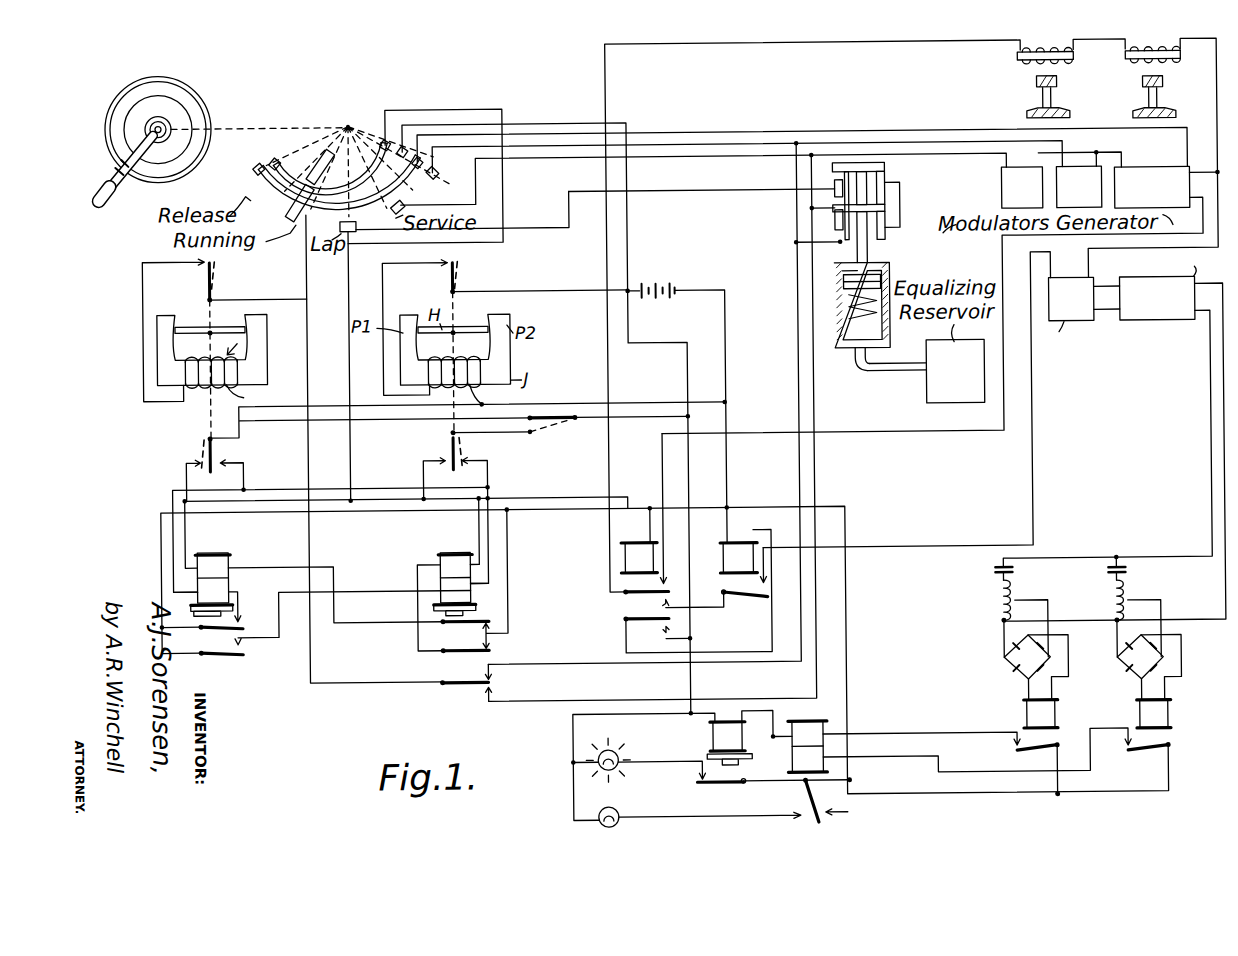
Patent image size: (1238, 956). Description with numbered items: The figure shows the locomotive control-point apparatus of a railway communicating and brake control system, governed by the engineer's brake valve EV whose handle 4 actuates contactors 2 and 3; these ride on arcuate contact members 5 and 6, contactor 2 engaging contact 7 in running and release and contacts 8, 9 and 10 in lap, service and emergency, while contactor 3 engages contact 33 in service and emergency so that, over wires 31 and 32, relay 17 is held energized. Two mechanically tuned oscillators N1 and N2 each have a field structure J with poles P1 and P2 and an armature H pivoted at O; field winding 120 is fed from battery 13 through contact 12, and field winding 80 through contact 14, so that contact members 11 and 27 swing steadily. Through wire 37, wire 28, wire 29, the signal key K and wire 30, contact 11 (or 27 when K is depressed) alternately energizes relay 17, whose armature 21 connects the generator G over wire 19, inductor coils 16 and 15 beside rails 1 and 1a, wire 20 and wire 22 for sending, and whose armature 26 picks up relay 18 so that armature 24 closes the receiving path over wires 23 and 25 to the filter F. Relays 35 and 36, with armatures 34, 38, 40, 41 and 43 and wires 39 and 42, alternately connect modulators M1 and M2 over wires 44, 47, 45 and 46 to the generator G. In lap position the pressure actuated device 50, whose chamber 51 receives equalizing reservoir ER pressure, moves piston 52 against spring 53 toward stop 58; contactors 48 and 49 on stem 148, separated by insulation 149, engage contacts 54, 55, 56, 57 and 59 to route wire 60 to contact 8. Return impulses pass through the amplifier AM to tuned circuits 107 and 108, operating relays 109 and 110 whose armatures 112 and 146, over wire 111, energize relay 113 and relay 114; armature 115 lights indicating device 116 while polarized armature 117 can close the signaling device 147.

The engineer's brake valve EV is at (161, 100).
The handle 4 is at (101, 197).
The contactor 2 is at (287, 206).
The contactor 3 is at (339, 176).
The arcuate contact member 5 is at (273, 154).
The arcuate contact member 6 is at (312, 156).
The contact 7 is at (251, 180).
The contact 8 is at (342, 222).
The contact 9 is at (392, 208).
The contact 10 is at (433, 184).
The contact 33 is at (359, 171).
The wire 32 is at (553, 124).
The wire 31 is at (505, 226).
The wire 46 is at (648, 134).
The wire 60 is at (683, 192).
The wire 20 is at (948, 45).
The inductor coil 15 is at (1027, 54).
The inductor coil 16 is at (1141, 54).
The traffic rail 1 is at (1056, 108).
The traffic rail 1a is at (1150, 103).
The wire 19 is at (1219, 94).
The modulator M1 is at (1021, 187).
The modulator M2 is at (1078, 186).
The generator G is at (1151, 187).
The wire 22 is at (1000, 252).
The wire 23 is at (1088, 250).
The wire 25 is at (1033, 384).
The wire 44 is at (815, 402).
The filter F is at (1066, 315).
The amplifier AM is at (1143, 283).
The contactor 48 is at (888, 170).
The contactor 49 is at (888, 211).
The contact 55 is at (888, 183).
The contact 57 is at (888, 238).
The stem 148 is at (798, 242).
The insulation 149 is at (862, 185).
The contact 54 is at (815, 187).
The contact 56 is at (815, 220).
The contact 59 is at (840, 246).
The spring 53 is at (891, 275).
The piston 52 is at (861, 290).
The stop 58 is at (863, 314).
The pressure actuated device 50 is at (853, 362).
The chamber 51 is at (897, 330).
The equalizing reservoir ER is at (955, 371).
The battery 13 is at (655, 286).
The wire 30 is at (648, 330).
The wire 37 is at (720, 456).
The wire 47 is at (797, 476).
The contact member 12 is at (208, 289).
The mechanically tuned oscillator N1 is at (212, 347).
The armature H is at (200, 326).
The pivot O is at (196, 349).
The pole P1 is at (160, 329).
The pole P2 is at (264, 322).
The field structure J is at (170, 385).
The field winding 120 is at (252, 396).
The contact 14 is at (448, 284).
The mechanically tuned oscillator N2 is at (455, 346).
The field winding 80 is at (483, 410).
The wire 29 is at (350, 420).
The signal key K is at (544, 413).
The contact member 11 is at (214, 452).
The contact member 27 is at (448, 449).
The wire 42 is at (366, 485).
The wire 28 is at (264, 497).
The wire 39 is at (340, 514).
The relay 36 is at (210, 552).
The armature 40 is at (230, 624).
The armature 41 is at (210, 651).
The wire 45 is at (319, 683).
The relay 35 is at (455, 552).
The armature 38 is at (472, 575).
The armature 43 is at (472, 646).
The armature 34 is at (462, 678).
The relay 17 is at (634, 541).
The armature 21 is at (650, 597).
The armature 26 is at (650, 625).
The relay 18 is at (739, 542).
The armature 24 is at (733, 600).
The wire 111 is at (846, 633).
The indicating device 116 is at (613, 749).
The signaling device 147 is at (614, 812).
The relay 114 is at (704, 740).
The armature 115 is at (718, 788).
The polarized armature 117 is at (803, 790).
The relay 113 is at (806, 728).
The armature 112 is at (1012, 753).
The armature 146 is at (1140, 760).
The tuned circuit 107 is at (1031, 634).
The tuned circuit 108 is at (1144, 633).
The relay 109 is at (1052, 720).
The relay 110 is at (1165, 721).